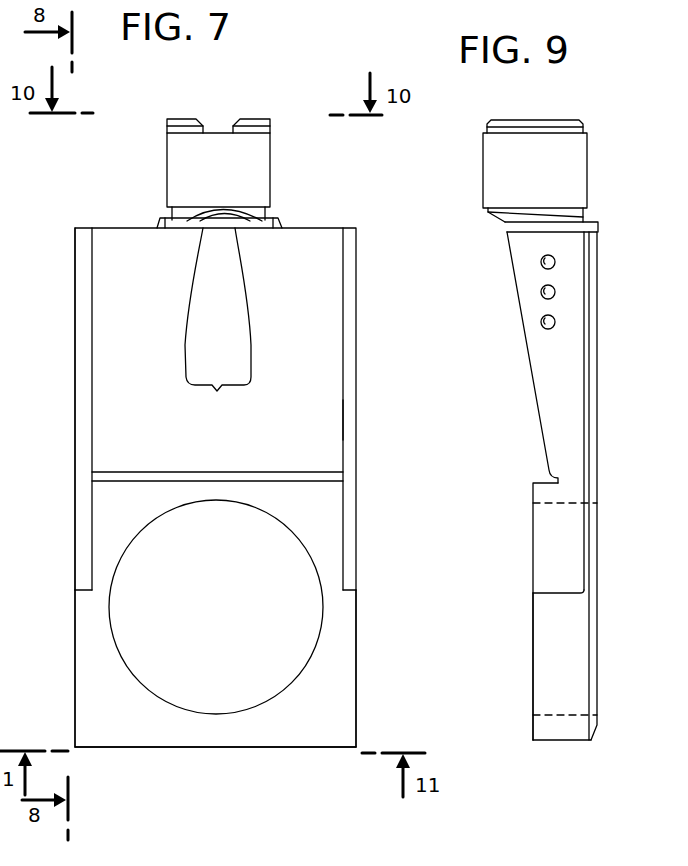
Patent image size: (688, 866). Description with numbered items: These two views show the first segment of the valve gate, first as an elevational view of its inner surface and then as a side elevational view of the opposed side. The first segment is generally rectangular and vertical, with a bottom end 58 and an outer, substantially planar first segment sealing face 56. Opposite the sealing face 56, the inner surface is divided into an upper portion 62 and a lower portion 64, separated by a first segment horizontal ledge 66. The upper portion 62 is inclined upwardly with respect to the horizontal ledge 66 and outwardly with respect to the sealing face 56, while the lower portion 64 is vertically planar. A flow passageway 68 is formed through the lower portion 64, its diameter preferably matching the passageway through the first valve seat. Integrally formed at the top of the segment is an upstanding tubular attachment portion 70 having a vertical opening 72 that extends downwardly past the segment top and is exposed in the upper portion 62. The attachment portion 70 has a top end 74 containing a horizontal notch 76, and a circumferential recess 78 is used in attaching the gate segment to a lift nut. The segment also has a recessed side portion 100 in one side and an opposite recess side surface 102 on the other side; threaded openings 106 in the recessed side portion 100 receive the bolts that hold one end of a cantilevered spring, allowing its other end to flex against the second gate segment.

In FIG. 9, the first segment sealing face 56 is at (598, 441).
In FIG. 7, the bottom end 58 is at (240, 748).
In FIG. 9, the bottom end 58 is at (558, 742).
In FIG. 7, the upper portion 62 is at (305, 362).
In FIG. 9, the upper portion 62 is at (532, 383).
In FIG. 7, the lower portion 64 is at (333, 678).
In FIG. 9, the lower portion 64 is at (532, 633).
In FIG. 7, the first segment horizontal ledge 66 is at (51, 409).
In FIG. 9, the first segment horizontal ledge 66 is at (535, 483).
In FIG. 7, the flow passageway 68 is at (185, 705).
In FIG. 9, the flow passageway 68 is at (568, 713).
In FIG. 7, the upstanding tubular attachment portion 70 is at (195, 163).
In FIG. 9, the upstanding tubular attachment portion 70 is at (510, 164).
In FIG. 7, the vertical opening 72 is at (236, 332).
In FIG. 7, the top end 74 is at (180, 118).
In FIG. 9, the top end 74 is at (528, 119).
In FIG. 7, the horizontal notch 76 is at (236, 128).
In FIG. 7, the circumferential recess 78 is at (265, 214).
In FIG. 7, the recessed side portion 100 is at (90, 420).
In FIG. 7, the opposite recess side surface 102 is at (342, 418).
In FIG. 9, the opposite recess side surface 102 is at (551, 410).
In FIG. 9, the threaded openings 106 is at (540, 265).